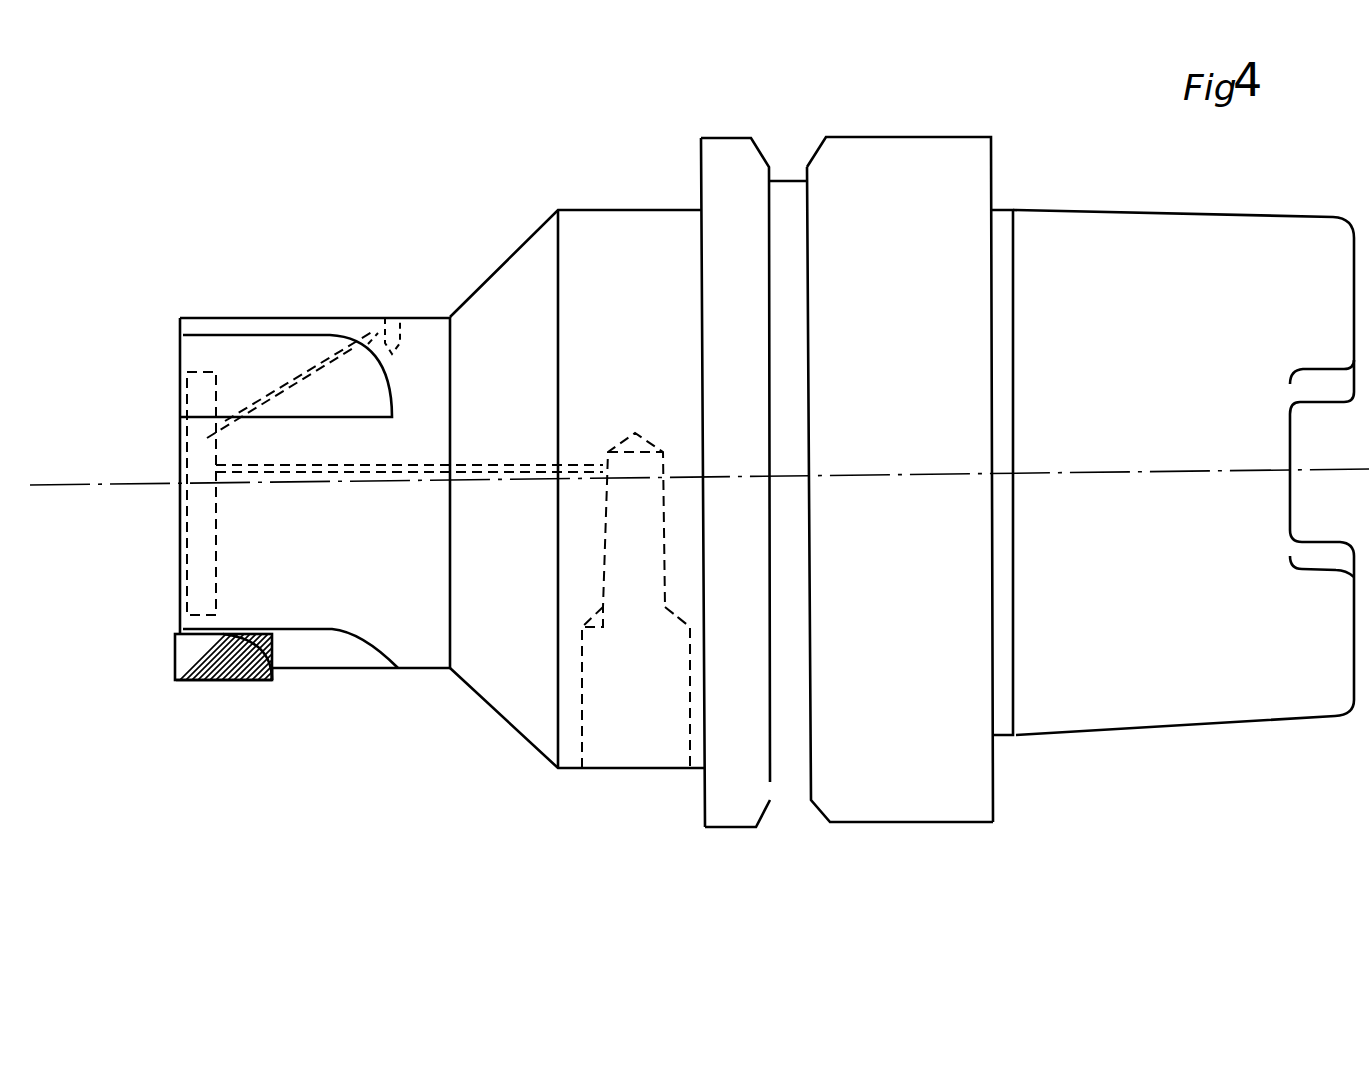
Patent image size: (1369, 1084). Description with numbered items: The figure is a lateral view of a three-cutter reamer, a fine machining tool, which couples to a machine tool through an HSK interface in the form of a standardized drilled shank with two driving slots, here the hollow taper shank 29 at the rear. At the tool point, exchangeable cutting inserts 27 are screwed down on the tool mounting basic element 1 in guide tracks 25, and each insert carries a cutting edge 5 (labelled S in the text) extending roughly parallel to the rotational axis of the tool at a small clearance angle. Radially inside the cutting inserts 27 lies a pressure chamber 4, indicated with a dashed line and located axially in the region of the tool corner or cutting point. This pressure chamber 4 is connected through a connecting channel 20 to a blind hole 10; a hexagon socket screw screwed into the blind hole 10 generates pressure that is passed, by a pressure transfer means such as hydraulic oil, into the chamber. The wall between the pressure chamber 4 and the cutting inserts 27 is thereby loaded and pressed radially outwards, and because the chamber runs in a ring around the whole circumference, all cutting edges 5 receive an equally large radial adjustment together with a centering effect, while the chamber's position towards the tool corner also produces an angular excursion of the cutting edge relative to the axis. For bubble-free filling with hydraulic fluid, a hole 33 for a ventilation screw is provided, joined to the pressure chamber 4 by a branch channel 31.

The tool mounting basic element 1 is at (510, 360).
The pressure chamber 4 is at (200, 602).
The cutting edge 5 is at (207, 682).
The blind hole 10 is at (622, 712).
The connecting channel 20 is at (480, 470).
The guide tracks 25 is at (265, 357).
The exchangeable cutting inserts 27 is at (245, 682).
The hollow taper shank 29 is at (1147, 733).
The branch channel 31 is at (362, 342).
The hole for a ventilation screw 33 is at (397, 322).